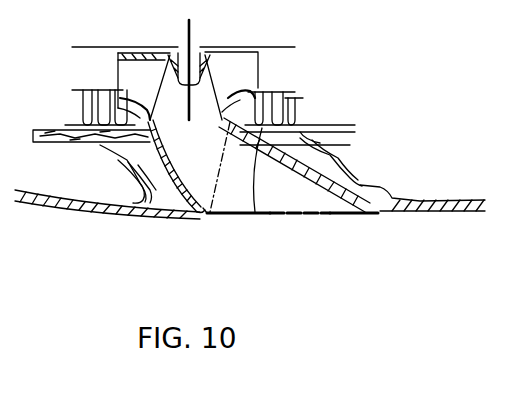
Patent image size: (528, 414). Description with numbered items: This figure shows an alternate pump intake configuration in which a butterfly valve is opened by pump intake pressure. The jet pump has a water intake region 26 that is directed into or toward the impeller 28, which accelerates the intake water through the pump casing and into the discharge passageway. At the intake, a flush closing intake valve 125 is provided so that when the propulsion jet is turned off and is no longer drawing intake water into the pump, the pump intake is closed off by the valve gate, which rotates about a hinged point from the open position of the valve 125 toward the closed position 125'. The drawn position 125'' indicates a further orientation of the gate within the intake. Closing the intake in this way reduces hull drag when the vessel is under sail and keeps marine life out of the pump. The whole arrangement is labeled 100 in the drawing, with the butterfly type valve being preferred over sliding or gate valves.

The impeller 28 is at (144, 86).
The water intake region 26 is at (181, 166).
The flush closing intake valve 125 is at (246, 244).
The valve gate closed position 125' is at (309, 231).
The valve gate position 125'' is at (353, 241).
The turbine assembly 100 is at (95, 278).